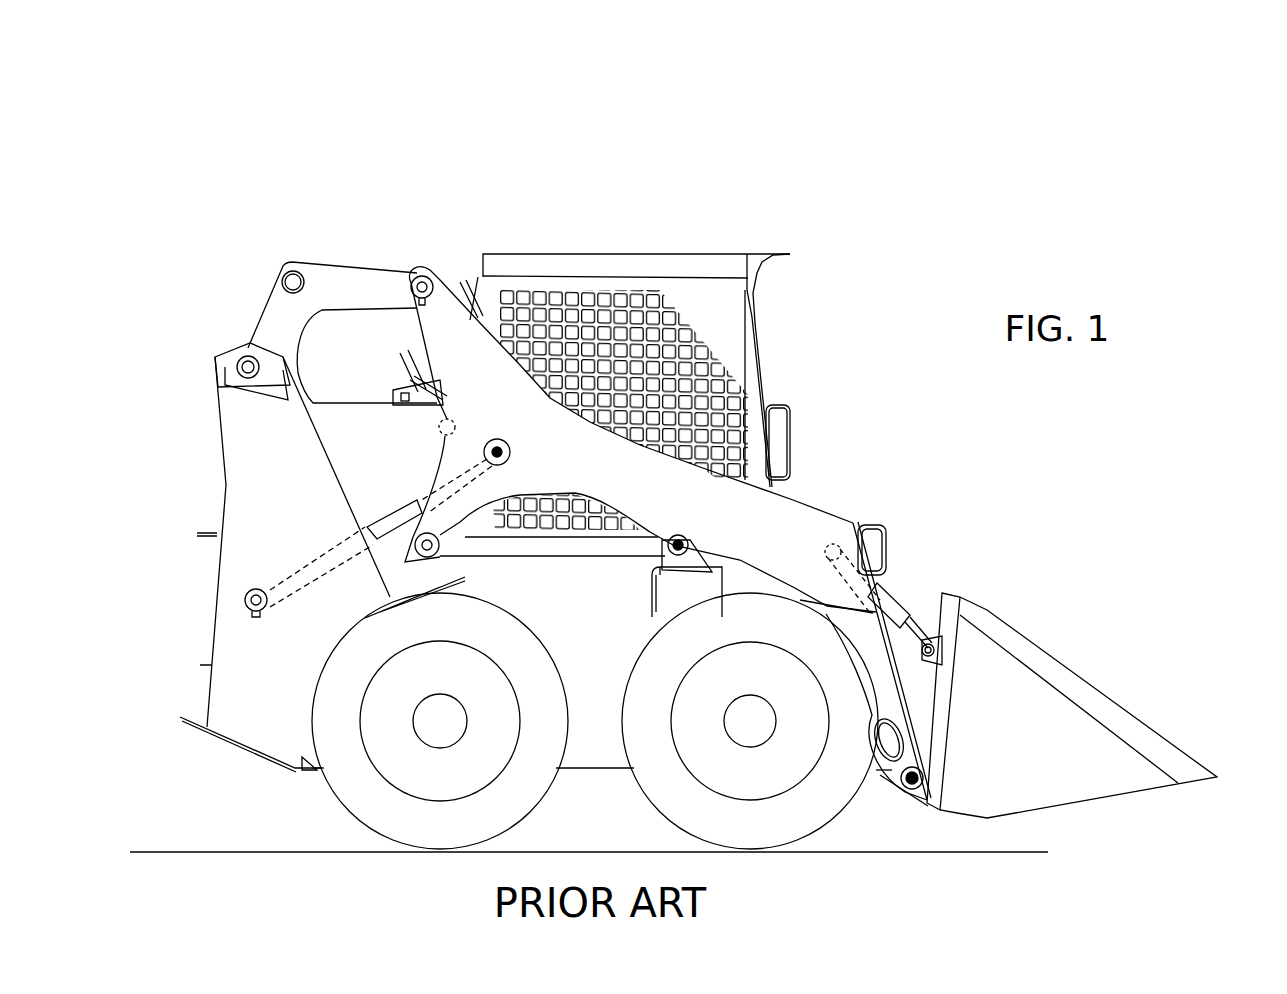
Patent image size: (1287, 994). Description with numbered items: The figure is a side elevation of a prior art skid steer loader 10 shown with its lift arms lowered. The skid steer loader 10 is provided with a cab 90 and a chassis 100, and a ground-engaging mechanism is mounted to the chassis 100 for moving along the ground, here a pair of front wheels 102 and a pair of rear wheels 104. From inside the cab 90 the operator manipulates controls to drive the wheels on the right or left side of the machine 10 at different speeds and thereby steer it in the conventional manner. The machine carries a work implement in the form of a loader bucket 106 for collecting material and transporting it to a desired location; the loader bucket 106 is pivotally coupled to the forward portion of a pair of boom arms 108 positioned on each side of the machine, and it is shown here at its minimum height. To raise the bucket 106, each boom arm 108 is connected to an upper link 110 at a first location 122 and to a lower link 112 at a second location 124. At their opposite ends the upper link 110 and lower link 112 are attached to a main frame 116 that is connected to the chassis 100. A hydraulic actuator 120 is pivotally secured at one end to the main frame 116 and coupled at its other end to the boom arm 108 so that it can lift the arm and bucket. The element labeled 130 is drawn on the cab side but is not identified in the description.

The skid steer loader 10 is at (783, 82).
The cab 90 is at (762, 236).
The chassis 100 is at (600, 732).
The front wheels 102 is at (818, 792).
The rear wheels 104 is at (382, 792).
The loader bucket 106 is at (1037, 702).
The boom arms 108 is at (803, 526).
The upper link 110 is at (428, 281).
The lower link 112 is at (445, 543).
The main frame 116 is at (597, 265).
The hydraulic actuator 120 is at (385, 557).
The first location 122 is at (406, 255).
The second location 124 is at (383, 553).
The cab post handle 130 is at (760, 370).